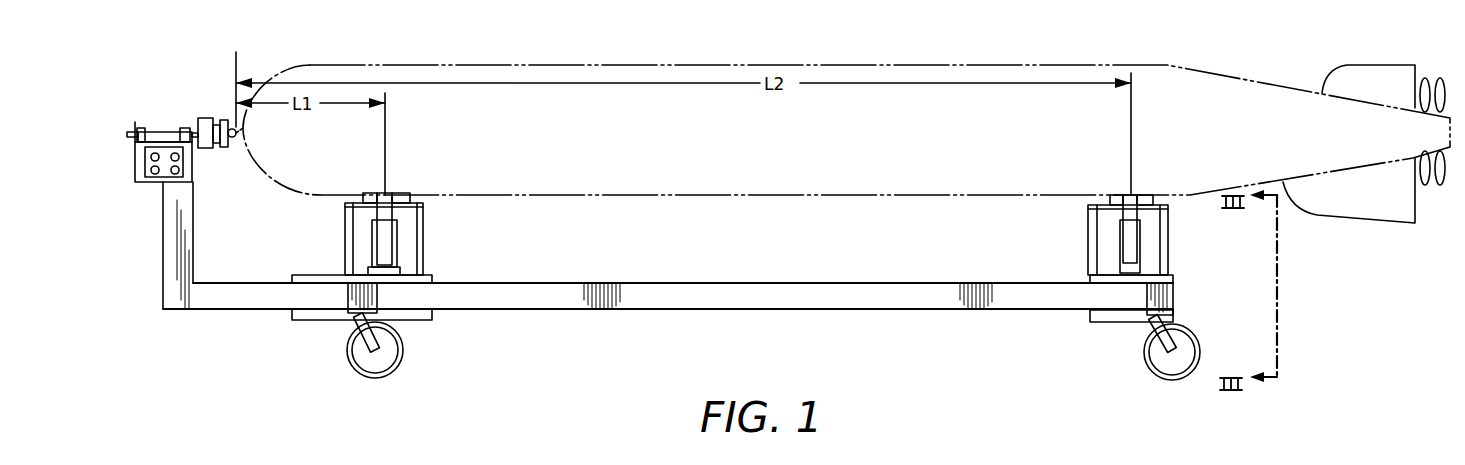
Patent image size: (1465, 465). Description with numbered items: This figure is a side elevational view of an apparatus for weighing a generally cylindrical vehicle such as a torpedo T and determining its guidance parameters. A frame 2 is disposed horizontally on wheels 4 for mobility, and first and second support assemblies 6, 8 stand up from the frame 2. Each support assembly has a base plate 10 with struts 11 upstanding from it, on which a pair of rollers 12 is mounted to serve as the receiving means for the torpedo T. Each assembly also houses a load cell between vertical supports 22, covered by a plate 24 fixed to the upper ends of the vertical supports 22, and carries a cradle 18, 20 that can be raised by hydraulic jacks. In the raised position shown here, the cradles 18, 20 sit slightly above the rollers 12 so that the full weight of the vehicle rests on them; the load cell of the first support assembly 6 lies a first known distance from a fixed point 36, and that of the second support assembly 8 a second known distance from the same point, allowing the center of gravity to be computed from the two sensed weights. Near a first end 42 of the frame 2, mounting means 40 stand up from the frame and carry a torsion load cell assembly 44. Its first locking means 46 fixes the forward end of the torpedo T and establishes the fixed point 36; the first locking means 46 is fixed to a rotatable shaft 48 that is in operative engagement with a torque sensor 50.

The frame 2 is at (815, 310).
The wheels 4 is at (404, 354).
The first support assembly 6 is at (374, 216).
The second support assembly 8 is at (1119, 206).
The base plate 10 is at (325, 275).
The struts 11 is at (397, 250).
The rollers 12 is at (388, 195).
The cradle 18 is at (402, 196).
The cradle 20 is at (1147, 195).
The vertical supports 22 is at (345, 230).
The plate 24 is at (425, 208).
The fixed point 36 is at (229, 155).
The mounting means 40 is at (163, 240).
The first end 42 is at (162, 185).
The torsion load cell assembly 44 is at (165, 92).
The first locking means 46 is at (225, 118).
The rotatable shaft 48 is at (168, 128).
The torque sensor 50 is at (206, 118).
The torpedo T is at (712, 195).